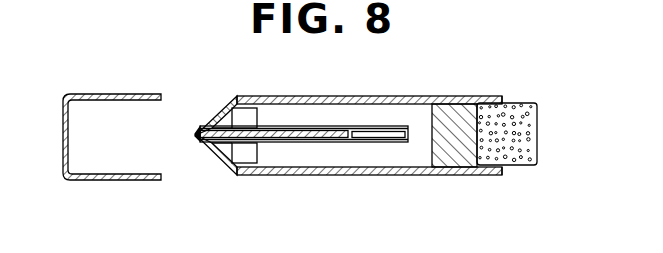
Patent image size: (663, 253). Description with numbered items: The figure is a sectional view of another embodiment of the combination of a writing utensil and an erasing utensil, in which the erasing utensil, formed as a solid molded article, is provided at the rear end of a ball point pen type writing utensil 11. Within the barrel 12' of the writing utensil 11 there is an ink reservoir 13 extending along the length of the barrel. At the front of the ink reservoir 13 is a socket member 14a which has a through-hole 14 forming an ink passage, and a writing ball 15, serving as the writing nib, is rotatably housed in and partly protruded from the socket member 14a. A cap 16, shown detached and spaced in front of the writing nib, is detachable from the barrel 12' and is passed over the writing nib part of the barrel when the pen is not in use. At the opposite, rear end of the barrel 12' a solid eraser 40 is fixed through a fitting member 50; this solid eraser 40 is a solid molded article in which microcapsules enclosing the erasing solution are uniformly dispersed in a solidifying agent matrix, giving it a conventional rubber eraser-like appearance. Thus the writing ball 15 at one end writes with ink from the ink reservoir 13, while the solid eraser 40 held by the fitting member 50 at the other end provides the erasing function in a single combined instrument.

The ball point pen type writing utensil 11 is at (316, 87).
The barrel 12' is at (430, 112).
The ink reservoir 13 is at (322, 143).
The through-hole 14 is at (211, 149).
The socket member 14a is at (207, 118).
The writing ball 15 is at (196, 133).
The cap 16 is at (116, 94).
The solid eraser 40 is at (517, 168).
The fitting member 50 is at (467, 110).